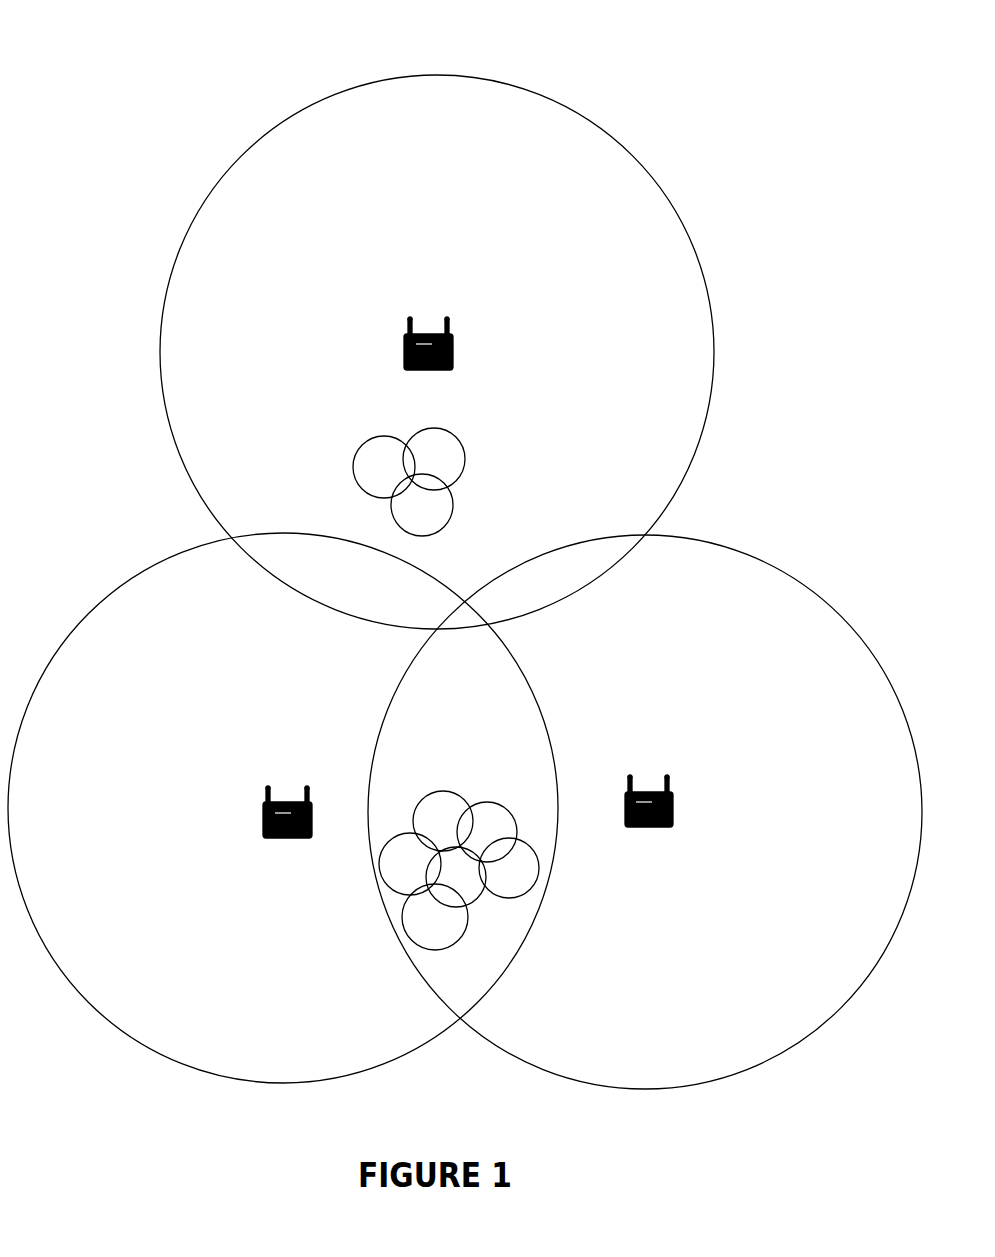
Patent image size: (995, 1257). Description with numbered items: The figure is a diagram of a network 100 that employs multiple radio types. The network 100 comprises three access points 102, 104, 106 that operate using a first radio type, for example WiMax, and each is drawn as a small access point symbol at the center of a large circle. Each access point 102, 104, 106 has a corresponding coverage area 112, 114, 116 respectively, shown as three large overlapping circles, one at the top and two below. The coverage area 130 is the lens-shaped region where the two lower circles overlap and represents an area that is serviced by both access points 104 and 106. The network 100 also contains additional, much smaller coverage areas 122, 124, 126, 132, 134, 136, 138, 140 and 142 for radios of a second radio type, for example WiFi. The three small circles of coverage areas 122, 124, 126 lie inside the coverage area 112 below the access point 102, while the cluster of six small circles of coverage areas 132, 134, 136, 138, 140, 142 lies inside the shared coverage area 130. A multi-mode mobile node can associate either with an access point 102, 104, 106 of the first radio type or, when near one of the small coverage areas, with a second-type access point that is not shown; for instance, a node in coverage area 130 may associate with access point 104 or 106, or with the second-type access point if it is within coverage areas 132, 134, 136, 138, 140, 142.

The network 100 is at (297, 55).
The access point 102 is at (404, 350).
The access point 104 is at (263, 825).
The access point 106 is at (675, 808).
The coverage area 112 is at (160, 353).
The coverage area 114 is at (98, 603).
The coverage area 116 is at (823, 602).
The coverage area 122 is at (353, 469).
The coverage area 124 is at (453, 507).
The coverage area 126 is at (466, 462).
The coverage area 130 is at (462, 985).
The coverage area 132 is at (440, 792).
The coverage area 134 is at (487, 805).
The coverage area 136 is at (538, 868).
The coverage area 138 is at (475, 902).
The coverage area 140 is at (402, 917).
The coverage area 142 is at (380, 865).